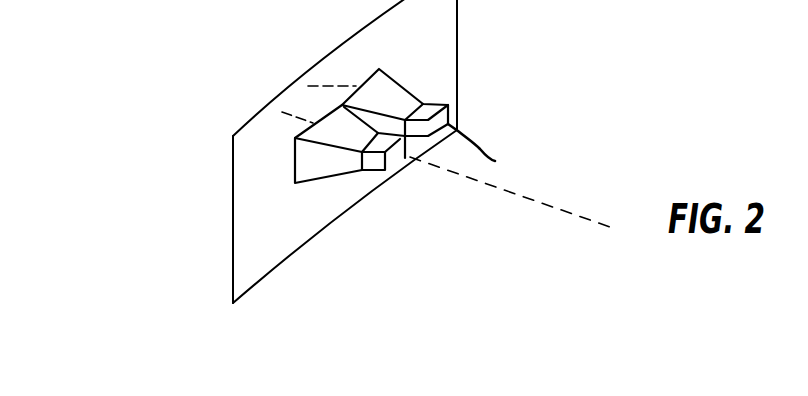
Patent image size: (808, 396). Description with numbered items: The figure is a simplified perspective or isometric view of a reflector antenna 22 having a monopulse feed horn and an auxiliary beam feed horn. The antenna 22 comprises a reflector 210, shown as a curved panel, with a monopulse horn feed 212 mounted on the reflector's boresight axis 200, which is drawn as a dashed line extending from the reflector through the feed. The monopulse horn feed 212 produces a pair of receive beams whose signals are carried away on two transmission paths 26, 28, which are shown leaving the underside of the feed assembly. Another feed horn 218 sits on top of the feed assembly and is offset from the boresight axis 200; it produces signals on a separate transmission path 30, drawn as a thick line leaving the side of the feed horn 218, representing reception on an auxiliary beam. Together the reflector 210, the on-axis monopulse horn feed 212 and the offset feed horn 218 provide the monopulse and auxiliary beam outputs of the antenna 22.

The antenna 22 is at (345, 151).
The transmission path 26 is at (405, 158).
The transmission path 28 is at (413, 156).
The transmission path 30 is at (480, 147).
The boresight axis 200 is at (538, 200).
The reflector 210 is at (440, 42).
The monopulse horn feed 212 is at (332, 128).
The feed horn 218 is at (373, 70).